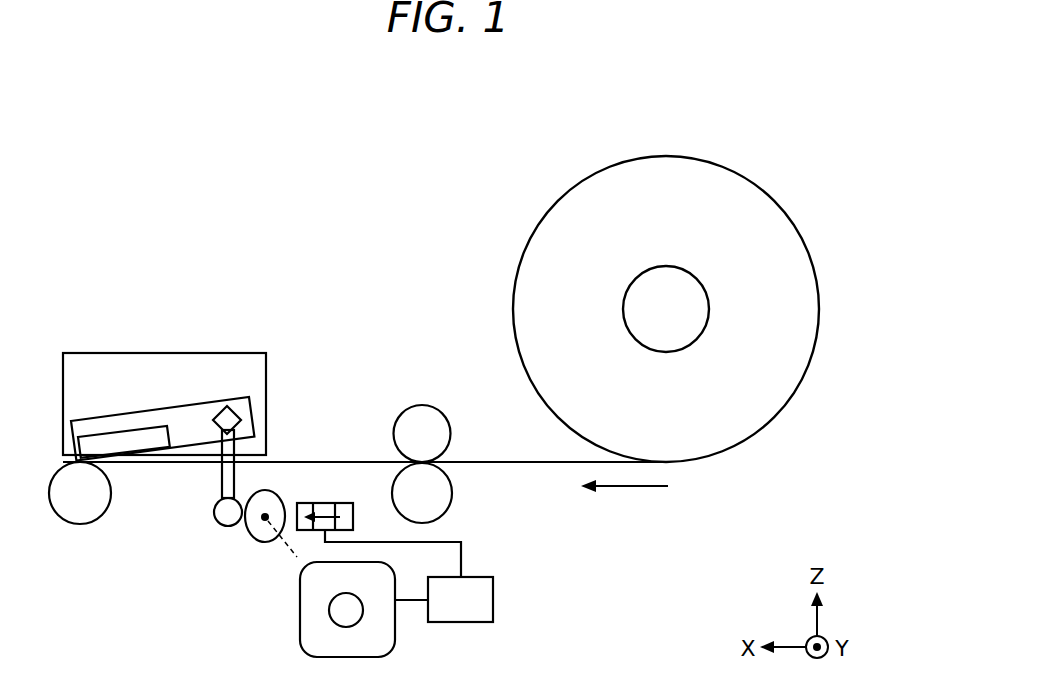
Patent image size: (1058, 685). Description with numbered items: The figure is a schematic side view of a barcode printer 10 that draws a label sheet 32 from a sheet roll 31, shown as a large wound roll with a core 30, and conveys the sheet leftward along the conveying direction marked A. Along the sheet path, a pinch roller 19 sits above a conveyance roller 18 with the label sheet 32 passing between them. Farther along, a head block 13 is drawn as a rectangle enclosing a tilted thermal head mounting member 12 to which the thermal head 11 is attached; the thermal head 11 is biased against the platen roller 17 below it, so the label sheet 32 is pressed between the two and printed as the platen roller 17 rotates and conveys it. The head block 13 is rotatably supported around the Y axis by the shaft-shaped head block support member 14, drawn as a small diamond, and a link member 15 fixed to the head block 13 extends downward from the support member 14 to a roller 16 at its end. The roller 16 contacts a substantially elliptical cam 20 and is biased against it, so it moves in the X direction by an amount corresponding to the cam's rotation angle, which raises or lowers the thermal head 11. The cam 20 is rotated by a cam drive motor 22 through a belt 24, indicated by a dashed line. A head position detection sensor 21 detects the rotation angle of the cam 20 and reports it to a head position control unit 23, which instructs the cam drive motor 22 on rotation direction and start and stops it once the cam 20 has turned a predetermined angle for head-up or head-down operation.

The barcode printer 10 is at (538, 119).
The thermal head 11 is at (95, 433).
The thermal head mounting member 12 is at (193, 403).
The head block 13 is at (142, 353).
The head block support member 14 is at (237, 405).
The link member 15 is at (222, 482).
The roller 16 is at (213, 512).
The platen roller 17 is at (80, 525).
The conveyance roller 18 is at (452, 492).
The pinch roller 19 is at (421, 405).
The cam 20 is at (245, 533).
The head position detection sensor 21 is at (325, 503).
The cam drive motor 22 is at (300, 620).
The head position control unit 23 is at (493, 600).
The belt 24 is at (291, 552).
The roll core 30 is at (670, 265).
The sheet roll 31 is at (730, 167).
The label sheet 32 is at (502, 462).